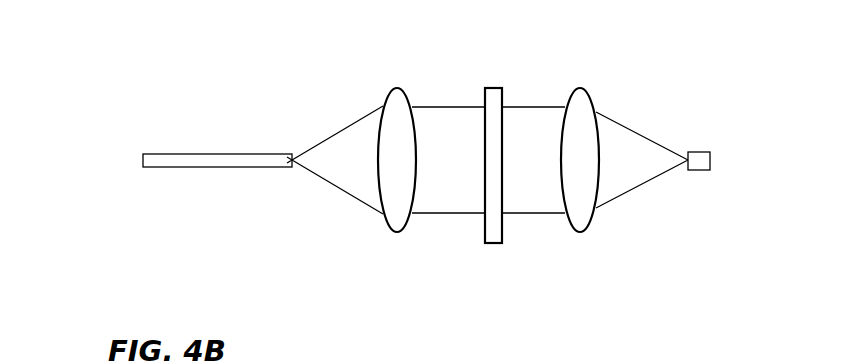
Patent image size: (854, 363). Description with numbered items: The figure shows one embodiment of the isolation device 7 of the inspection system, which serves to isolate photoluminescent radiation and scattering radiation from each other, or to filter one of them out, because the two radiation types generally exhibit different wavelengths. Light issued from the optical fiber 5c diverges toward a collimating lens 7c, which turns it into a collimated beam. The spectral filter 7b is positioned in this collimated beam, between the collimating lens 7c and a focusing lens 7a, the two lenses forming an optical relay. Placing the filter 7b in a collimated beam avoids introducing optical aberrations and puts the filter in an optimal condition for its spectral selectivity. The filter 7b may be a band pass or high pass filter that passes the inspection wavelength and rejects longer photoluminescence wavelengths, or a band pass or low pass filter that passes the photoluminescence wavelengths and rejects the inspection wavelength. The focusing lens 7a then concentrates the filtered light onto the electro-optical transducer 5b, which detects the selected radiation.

The isolation device 7 is at (576, 50).
The focusing lens 7a is at (597, 222).
The spectral filter 7b is at (485, 236).
The collimating lens 7c is at (388, 98).
The electro-optical transducer 5b is at (710, 160).
The optical fiber 5c is at (143, 155).